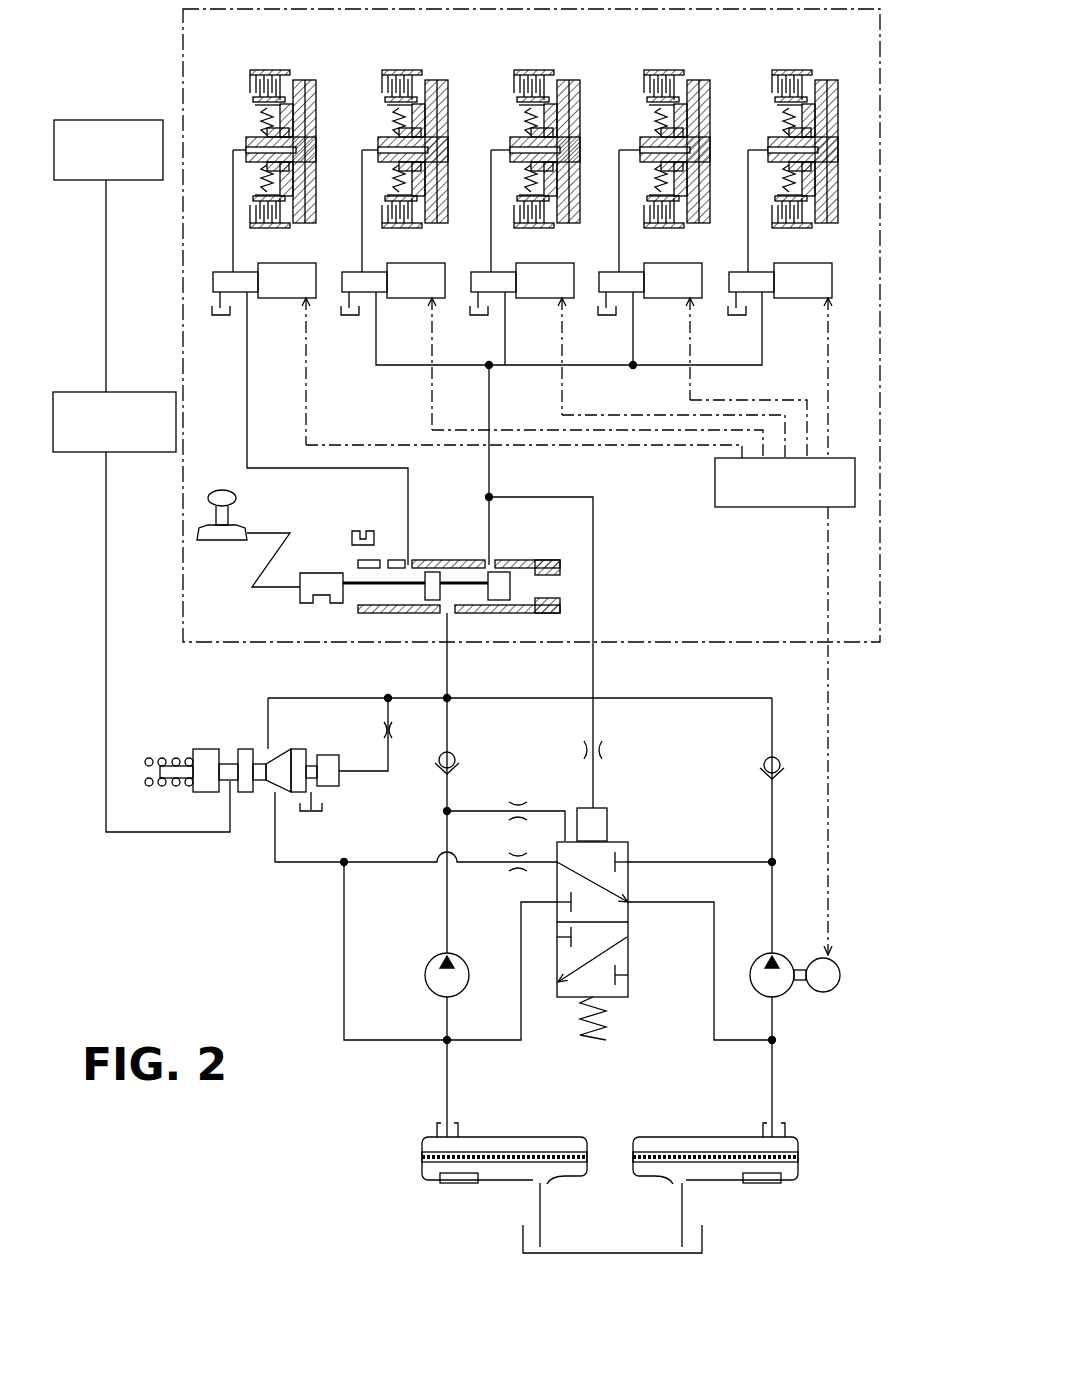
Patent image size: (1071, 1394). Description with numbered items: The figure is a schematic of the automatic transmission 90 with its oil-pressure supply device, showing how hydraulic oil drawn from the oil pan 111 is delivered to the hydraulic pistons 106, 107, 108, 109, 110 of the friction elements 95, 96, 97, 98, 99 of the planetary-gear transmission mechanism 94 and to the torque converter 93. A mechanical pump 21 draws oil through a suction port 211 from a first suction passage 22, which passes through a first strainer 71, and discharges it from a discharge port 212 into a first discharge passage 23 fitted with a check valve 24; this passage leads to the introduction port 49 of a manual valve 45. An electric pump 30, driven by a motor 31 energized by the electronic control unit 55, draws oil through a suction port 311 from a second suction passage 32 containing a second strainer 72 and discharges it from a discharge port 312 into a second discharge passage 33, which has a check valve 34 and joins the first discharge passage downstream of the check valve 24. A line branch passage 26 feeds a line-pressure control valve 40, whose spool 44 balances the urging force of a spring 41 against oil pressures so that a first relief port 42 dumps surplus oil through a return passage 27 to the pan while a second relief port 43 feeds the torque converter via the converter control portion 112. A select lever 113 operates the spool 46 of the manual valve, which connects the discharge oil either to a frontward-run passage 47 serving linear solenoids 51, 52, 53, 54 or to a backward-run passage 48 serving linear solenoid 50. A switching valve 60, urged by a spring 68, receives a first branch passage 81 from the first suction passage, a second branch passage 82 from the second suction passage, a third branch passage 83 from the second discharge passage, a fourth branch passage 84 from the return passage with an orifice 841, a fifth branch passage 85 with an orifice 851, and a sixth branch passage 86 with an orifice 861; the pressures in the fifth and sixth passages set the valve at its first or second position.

The mechanical pump 21 is at (426, 976).
The suction port 211 is at (446, 999).
The discharge port 212 is at (445, 954).
The first suction passage 22 is at (444, 1074).
The first discharge passage 23 is at (449, 676).
The check valve 24 is at (455, 758).
The line branch passage 26 is at (408, 698).
The return passage 27 is at (304, 864).
The electric pump 30 is at (762, 976).
The suction port 311 is at (774, 1000).
The discharge port 312 is at (774, 956).
The motor 31 is at (840, 976).
The second suction passage 32 is at (774, 1087).
The second discharge passage 33 is at (773, 832).
The check valve 34 is at (764, 758).
The line-pressure control valve 40 is at (257, 782).
The spring 41 is at (174, 756).
The first relief port 42 is at (265, 797).
The second relief port 43 is at (228, 794).
The spool 44 is at (300, 752).
The manual valve 45 is at (440, 565).
The spool 46 is at (435, 574).
The frontward-run passage 47 is at (490, 466).
The backward-run passage 48 is at (410, 488).
The introduction port 49 is at (449, 620).
The linear solenoid 50 is at (285, 300).
The linear solenoid 51 is at (414, 300).
The linear solenoid 52 is at (543, 300).
The linear solenoid 53 is at (670, 300).
The linear solenoid 54 is at (800, 300).
The electronic control unit 55 is at (785, 508).
The switching valve 60 is at (650, 913).
The spring 68 is at (584, 1024).
The first strainer 71 is at (481, 1160).
The second strainer 72 is at (741, 1160).
The first branch passage 81 is at (521, 940).
The second branch passage 82 is at (714, 1017).
The third branch passage 83 is at (724, 862).
The fourth branch passage 84 is at (480, 865).
The orifice 841 is at (516, 854).
The fifth branch passage 85 is at (487, 810).
The orifice 851 is at (520, 801).
The sixth branch passage 86 is at (594, 666).
The orifice 861 is at (602, 750).
The automatic transmission 90 is at (112, 62).
The torque converter 93 is at (76, 120).
The planetary-gear transmission mechanism 94 is at (183, 95).
The backward-run friction element 95 is at (278, 69).
The frontward-run friction element 96 is at (413, 69).
The frontward-run friction element 97 is at (543, 69).
The frontward-run friction element 98 is at (671, 69).
The frontward-run friction element 99 is at (801, 69).
The hydraulic piston 106 is at (310, 100).
The hydraulic piston 107 is at (444, 100).
The hydraulic piston 108 is at (575, 100).
The hydraulic piston 109 is at (704, 100).
The hydraulic piston 110 is at (832, 100).
The oil pan 111 is at (522, 1236).
The converter control portion 112 is at (76, 392).
The select lever 113 is at (236, 498).